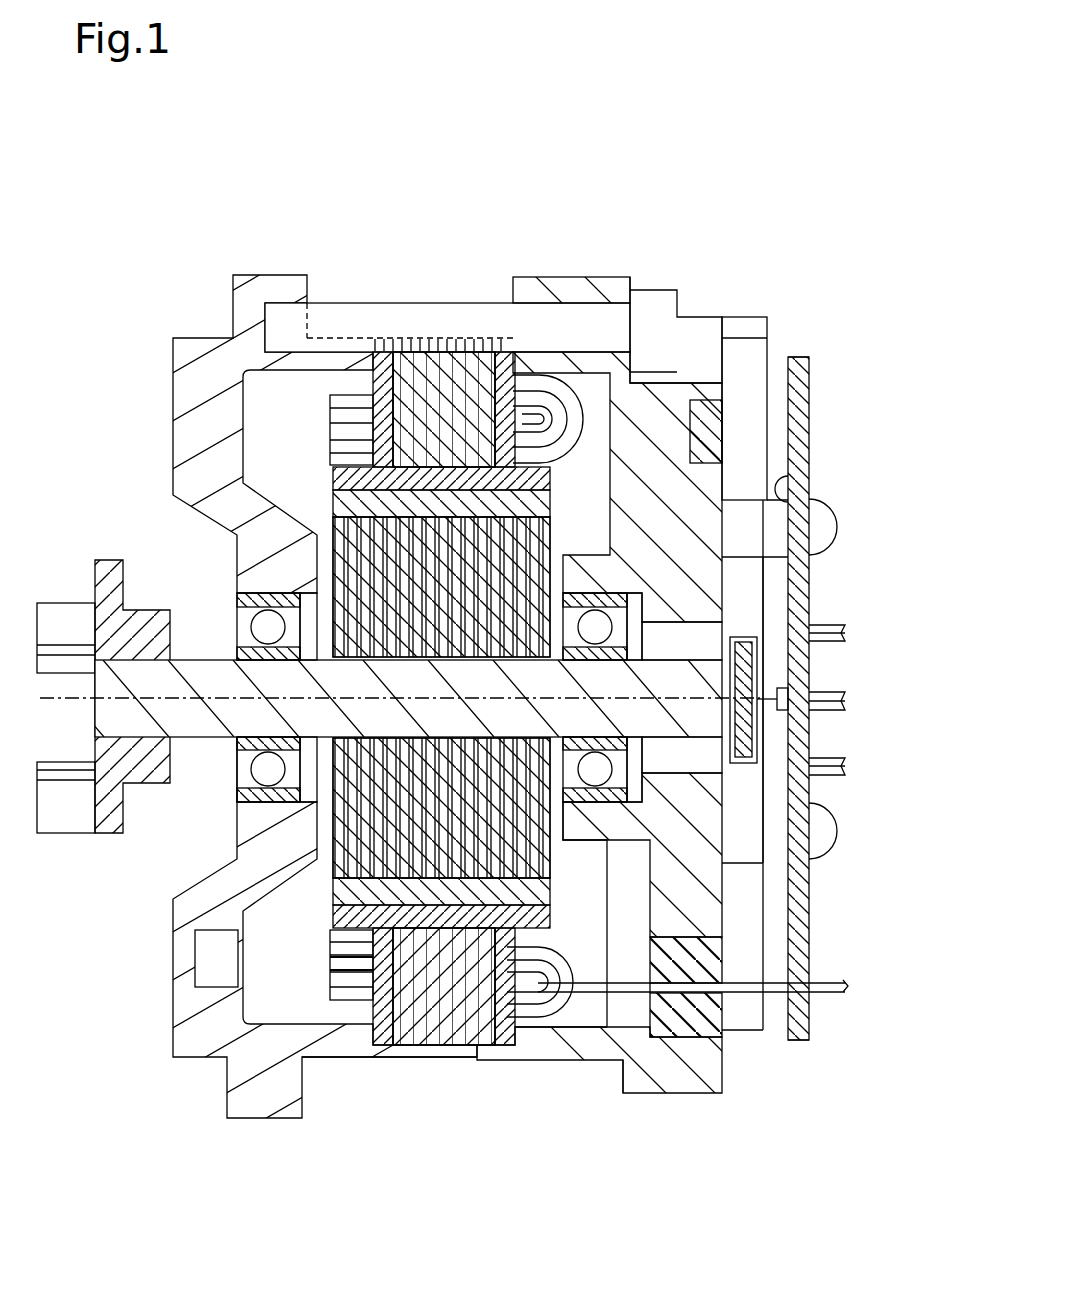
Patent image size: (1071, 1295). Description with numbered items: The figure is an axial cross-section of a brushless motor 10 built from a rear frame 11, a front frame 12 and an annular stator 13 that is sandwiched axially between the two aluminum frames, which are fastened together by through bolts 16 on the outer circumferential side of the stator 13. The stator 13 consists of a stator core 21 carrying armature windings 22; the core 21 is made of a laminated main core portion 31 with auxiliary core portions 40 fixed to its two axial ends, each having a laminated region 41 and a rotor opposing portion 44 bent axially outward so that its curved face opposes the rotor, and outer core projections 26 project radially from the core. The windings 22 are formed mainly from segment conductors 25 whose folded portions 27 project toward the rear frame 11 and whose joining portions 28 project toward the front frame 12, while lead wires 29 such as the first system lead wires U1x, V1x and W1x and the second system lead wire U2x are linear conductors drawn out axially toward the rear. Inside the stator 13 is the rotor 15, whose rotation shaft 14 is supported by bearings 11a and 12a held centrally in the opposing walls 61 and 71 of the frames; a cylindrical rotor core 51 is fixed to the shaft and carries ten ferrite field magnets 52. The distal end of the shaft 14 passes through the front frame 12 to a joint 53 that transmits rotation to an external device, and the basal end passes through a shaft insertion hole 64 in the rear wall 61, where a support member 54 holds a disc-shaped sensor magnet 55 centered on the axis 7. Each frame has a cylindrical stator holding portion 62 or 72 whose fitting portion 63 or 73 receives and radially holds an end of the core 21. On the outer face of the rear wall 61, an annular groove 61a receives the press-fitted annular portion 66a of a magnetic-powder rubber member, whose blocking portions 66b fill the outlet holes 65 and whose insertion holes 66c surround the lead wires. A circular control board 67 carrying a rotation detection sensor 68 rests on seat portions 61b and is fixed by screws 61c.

The motor 10 is at (477, 648).
The rear frame 11 is at (612, 278).
The bearing 11a is at (572, 812).
The front frame 12 is at (173, 450).
The bearing 12a is at (233, 740).
The stator 13 is at (319, 416).
The rotation shaft 14 is at (205, 660).
The rotor 15 is at (320, 580).
The through bolts 16 is at (400, 303).
The stator core 21 is at (407, 1047).
The armature windings 22 is at (527, 1030).
The segment conductor 25 is at (580, 1007).
The outer core projections 26 is at (470, 337).
The folded portion 27 is at (557, 1027).
The joining portion 28 is at (323, 985).
The lead wires 29 is at (863, 703).
The main core portion 31 is at (440, 1047).
The auxiliary core portions 40 is at (363, 1007).
The laminated region 41 is at (328, 967).
The rotor opposing portion 44 is at (327, 920).
The rotor core 51 is at (330, 512).
The field magnets 52 is at (553, 478).
The joint 53 is at (63, 820).
The support member 54 is at (748, 790).
The sensor magnet 55 is at (772, 650).
The opposing wall 61 is at (713, 890).
The annular groove 61a is at (727, 1033).
The seat portions 61b is at (777, 497).
The screws 61c is at (837, 505).
The stator holding portion 62 is at (587, 1063).
The fitting portion 63 is at (470, 1047).
The shaft insertion hole 64 is at (690, 632).
The outlet holes 65 is at (645, 955).
The annular portion 66a is at (757, 1012).
The blocking portions 66b is at (647, 967).
The insertion holes 66c is at (688, 950).
The control board 67 is at (812, 385).
The rotation detection sensor 68 is at (797, 727).
The opposing wall 71 is at (178, 947).
The stator holding portion 72 is at (352, 1057).
The fitting portion 73 is at (387, 1057).
The axis 7 is at (63, 693).
The first system lead wire V1x is at (830, 625).
The first system lead wire U1x is at (825, 690).
The first system lead wire W1x is at (825, 760).
The second system lead wire U2x is at (845, 982).